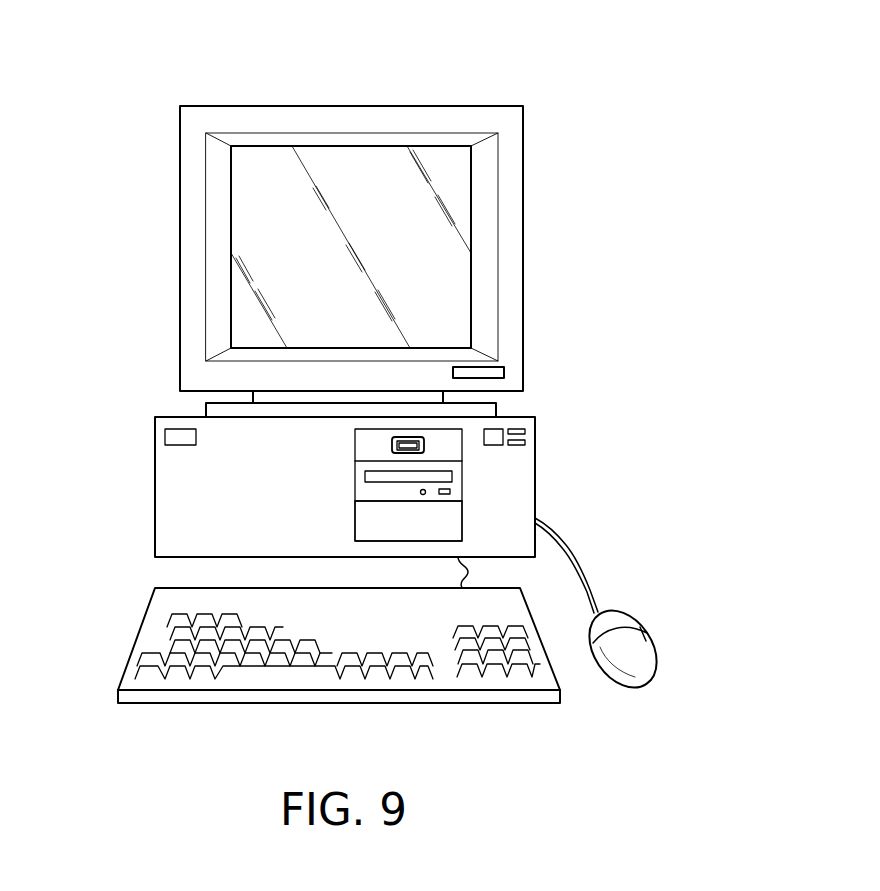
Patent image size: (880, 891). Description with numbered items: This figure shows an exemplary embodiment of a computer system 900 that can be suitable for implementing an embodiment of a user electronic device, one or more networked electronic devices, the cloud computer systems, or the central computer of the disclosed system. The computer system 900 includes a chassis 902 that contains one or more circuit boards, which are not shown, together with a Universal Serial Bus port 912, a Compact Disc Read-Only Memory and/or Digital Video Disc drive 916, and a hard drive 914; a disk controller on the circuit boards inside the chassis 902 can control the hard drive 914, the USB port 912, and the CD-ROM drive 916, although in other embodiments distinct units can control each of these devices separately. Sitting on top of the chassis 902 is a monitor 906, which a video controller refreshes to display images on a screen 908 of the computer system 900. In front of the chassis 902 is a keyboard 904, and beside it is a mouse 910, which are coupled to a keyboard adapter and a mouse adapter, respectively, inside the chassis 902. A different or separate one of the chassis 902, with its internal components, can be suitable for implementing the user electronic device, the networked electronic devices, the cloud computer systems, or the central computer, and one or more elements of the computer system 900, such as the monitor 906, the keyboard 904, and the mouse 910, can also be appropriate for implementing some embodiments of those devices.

The computer system 900 is at (513, 83).
The chassis 902 is at (155, 489).
The keyboard 904 is at (137, 638).
The monitor 906 is at (250, 106).
The screen 908 is at (275, 252).
The mouse 910 is at (645, 632).
The USB port 912 is at (427, 441).
The hard drive 914 is at (453, 519).
The CD-ROM drive 916 is at (455, 483).